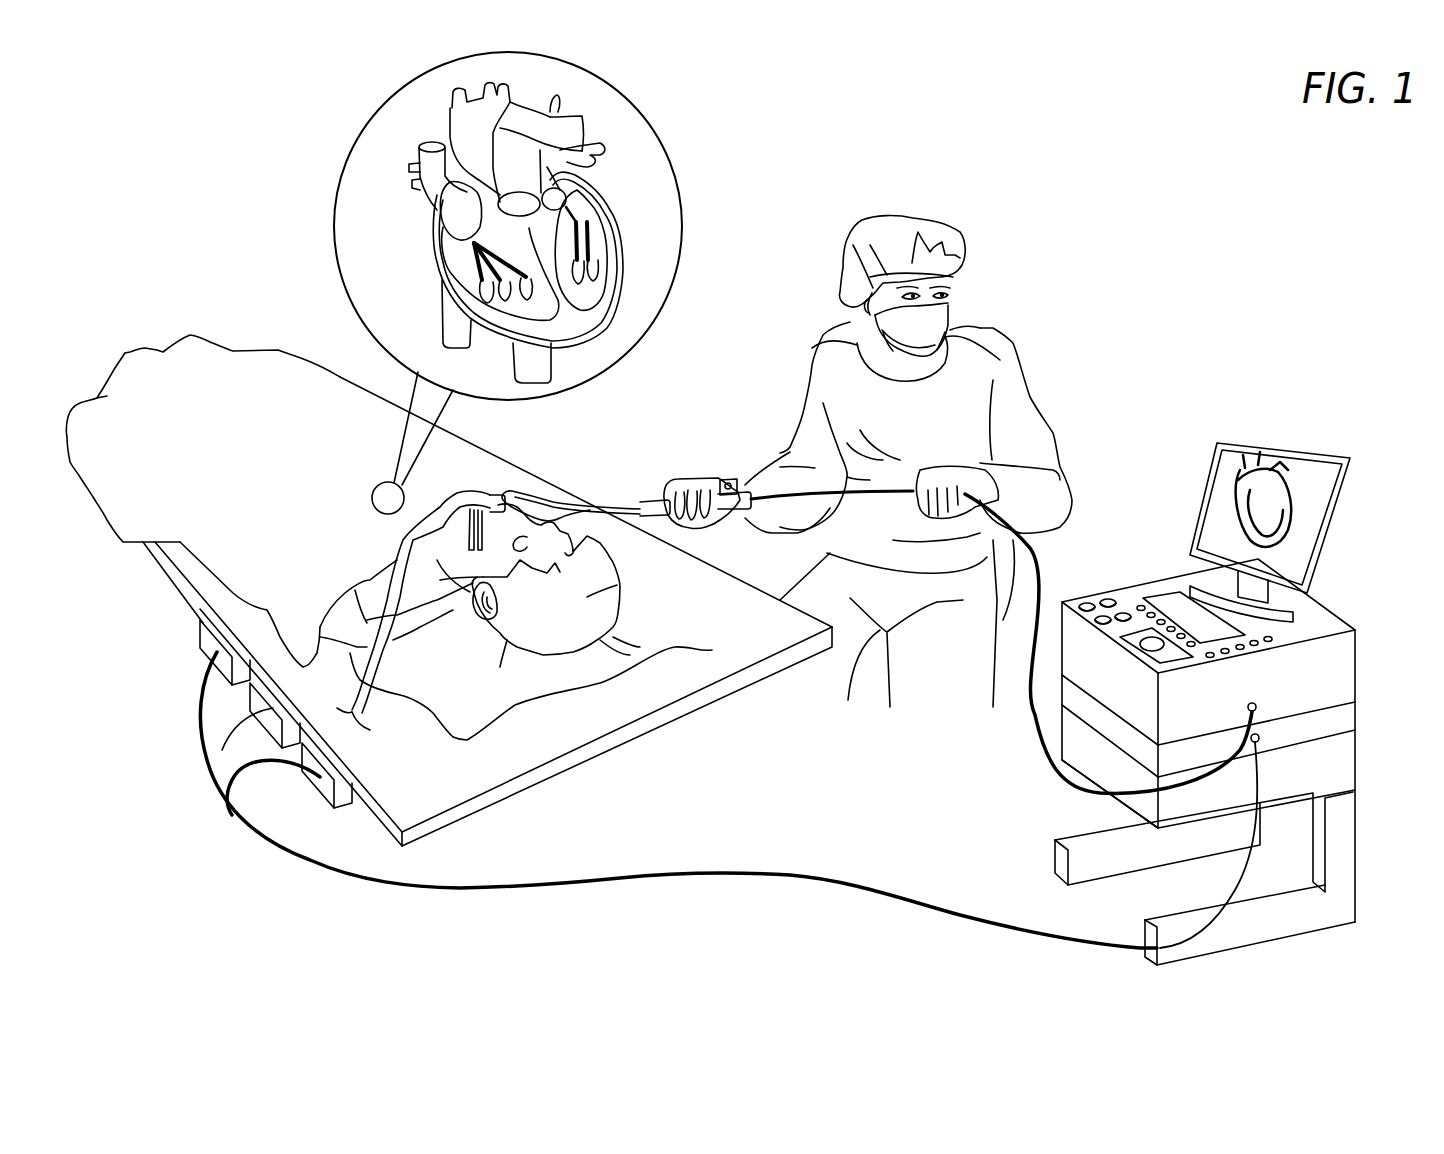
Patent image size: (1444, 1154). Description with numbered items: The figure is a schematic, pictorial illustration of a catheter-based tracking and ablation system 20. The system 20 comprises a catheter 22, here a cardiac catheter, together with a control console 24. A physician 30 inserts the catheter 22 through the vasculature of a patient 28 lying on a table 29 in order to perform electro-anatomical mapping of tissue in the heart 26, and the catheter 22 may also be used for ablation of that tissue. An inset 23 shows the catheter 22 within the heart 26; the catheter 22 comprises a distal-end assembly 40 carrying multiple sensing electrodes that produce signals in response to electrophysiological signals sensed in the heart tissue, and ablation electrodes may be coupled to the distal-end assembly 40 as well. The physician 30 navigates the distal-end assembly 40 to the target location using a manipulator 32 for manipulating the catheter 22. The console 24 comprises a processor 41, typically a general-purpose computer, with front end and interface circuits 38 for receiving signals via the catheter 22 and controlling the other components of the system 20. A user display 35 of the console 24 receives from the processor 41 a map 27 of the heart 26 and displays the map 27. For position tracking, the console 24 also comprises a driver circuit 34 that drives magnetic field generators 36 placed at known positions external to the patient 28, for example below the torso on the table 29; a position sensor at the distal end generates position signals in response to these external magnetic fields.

The catheter-based tracking and ablation system 20 is at (1215, 243).
The catheter 22 is at (560, 105).
The inset 23 is at (337, 190).
The control console 24 is at (1360, 612).
The heart 26 is at (613, 286).
The map 27 is at (1293, 518).
The patient 28 is at (513, 637).
The table 29 is at (623, 738).
The physician 30 is at (850, 262).
The manipulator 32 is at (748, 469).
The driver circuit 34 is at (1347, 670).
The user display 35 is at (1272, 453).
The magnetic field generators 36 is at (218, 652).
The front end and interface circuits 38 is at (1347, 768).
The distal-end assembly 40 is at (577, 222).
The processor 41 is at (1347, 718).